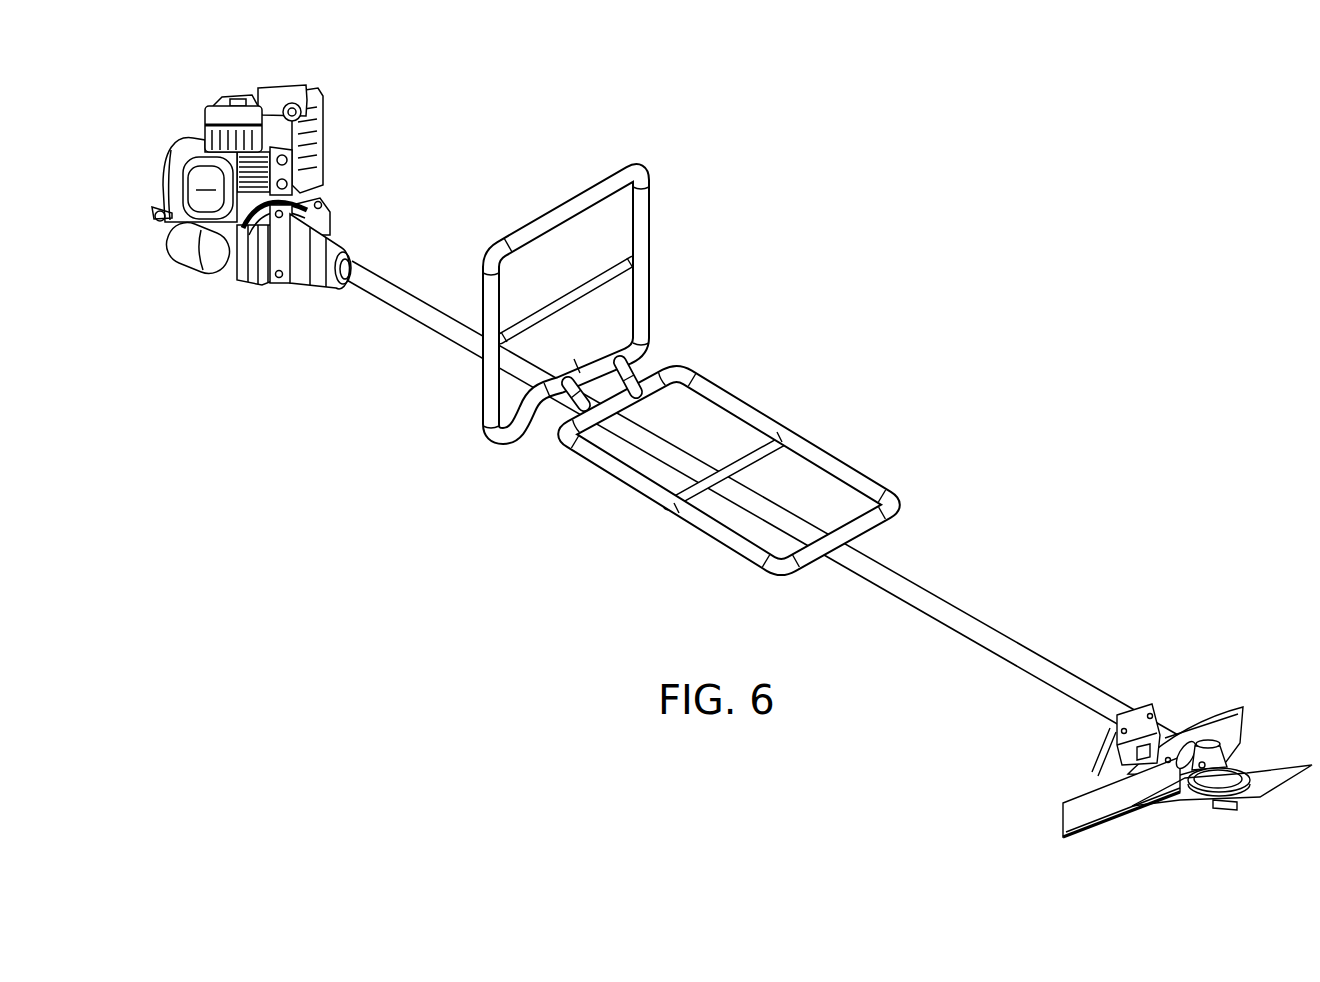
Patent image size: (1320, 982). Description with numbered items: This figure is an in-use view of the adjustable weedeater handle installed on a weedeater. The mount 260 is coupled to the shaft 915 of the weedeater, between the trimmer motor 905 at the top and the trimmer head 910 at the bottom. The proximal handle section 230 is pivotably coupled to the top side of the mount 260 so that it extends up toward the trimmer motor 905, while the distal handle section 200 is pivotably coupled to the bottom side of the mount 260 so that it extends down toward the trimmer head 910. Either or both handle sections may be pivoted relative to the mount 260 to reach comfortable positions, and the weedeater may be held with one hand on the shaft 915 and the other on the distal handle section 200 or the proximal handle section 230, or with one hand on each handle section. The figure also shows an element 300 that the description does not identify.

The power unit / engine 300 is at (269, 43).
The trimmer motor 905 is at (216, 272).
The proximal handle section 230 is at (675, 361).
The mount 260 is at (643, 363).
The distal handle section 200 is at (772, 621).
The shaft 915 is at (1007, 648).
The trimmer head 910 is at (1228, 730).